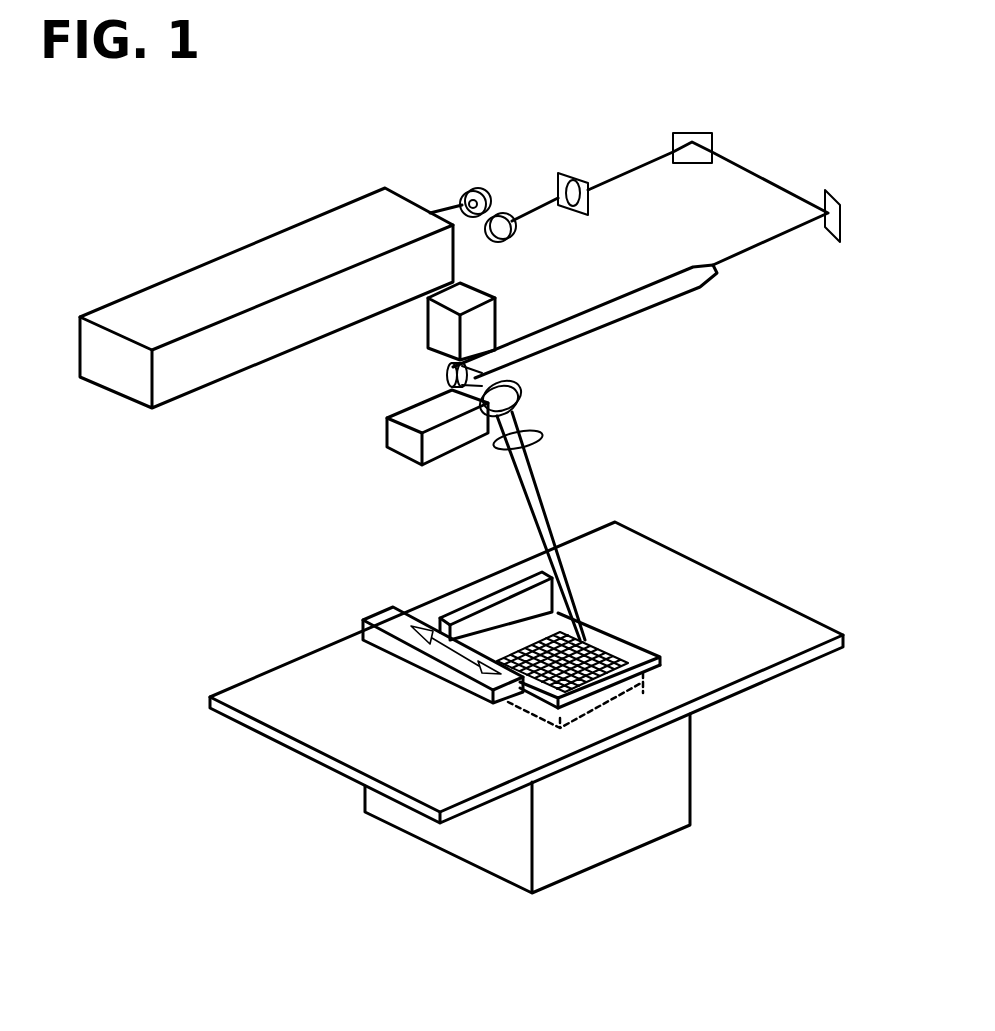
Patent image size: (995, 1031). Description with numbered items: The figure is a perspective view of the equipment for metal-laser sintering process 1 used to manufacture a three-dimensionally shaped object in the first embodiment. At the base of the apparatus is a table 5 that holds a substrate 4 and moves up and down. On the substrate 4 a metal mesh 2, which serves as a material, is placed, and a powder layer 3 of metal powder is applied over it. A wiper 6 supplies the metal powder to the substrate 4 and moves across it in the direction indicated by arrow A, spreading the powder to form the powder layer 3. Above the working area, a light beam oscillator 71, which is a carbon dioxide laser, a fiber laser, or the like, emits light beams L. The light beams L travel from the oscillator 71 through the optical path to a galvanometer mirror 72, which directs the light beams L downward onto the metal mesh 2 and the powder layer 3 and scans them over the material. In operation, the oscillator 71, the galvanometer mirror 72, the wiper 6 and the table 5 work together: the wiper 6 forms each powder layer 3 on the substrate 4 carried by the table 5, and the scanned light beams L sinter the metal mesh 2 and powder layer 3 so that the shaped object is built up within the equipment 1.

The equipment for metal-laser sintering process 1 is at (100, 157).
The light beam oscillator 71 is at (207, 282).
The galvanometer mirror 72 is at (450, 393).
The light beams L is at (750, 168).
The metal mesh 2 is at (603, 648).
The powder layer 3 is at (645, 675).
The substrate 4 is at (662, 663).
The table 5 is at (607, 702).
The wiper 6 is at (496, 610).
The arrow A is at (453, 647).